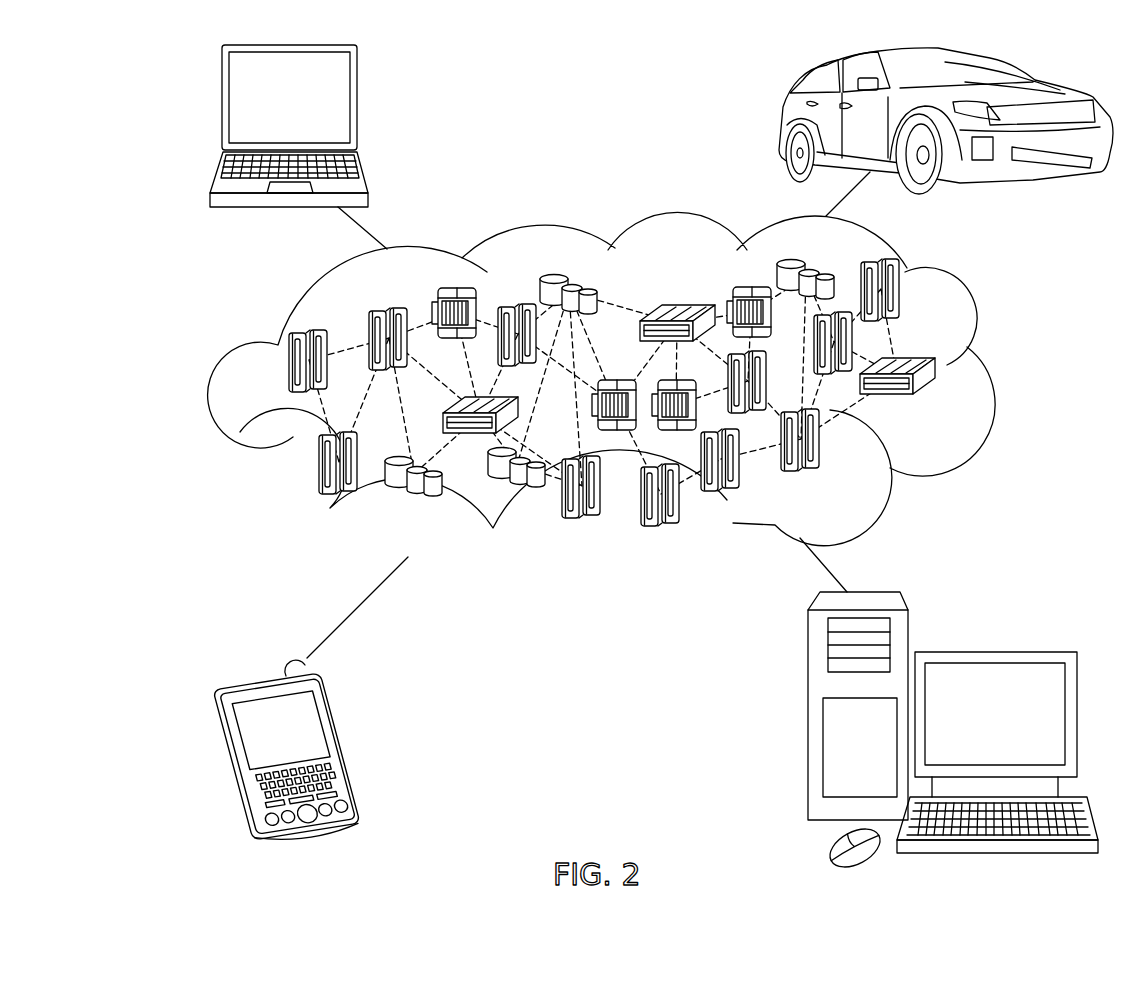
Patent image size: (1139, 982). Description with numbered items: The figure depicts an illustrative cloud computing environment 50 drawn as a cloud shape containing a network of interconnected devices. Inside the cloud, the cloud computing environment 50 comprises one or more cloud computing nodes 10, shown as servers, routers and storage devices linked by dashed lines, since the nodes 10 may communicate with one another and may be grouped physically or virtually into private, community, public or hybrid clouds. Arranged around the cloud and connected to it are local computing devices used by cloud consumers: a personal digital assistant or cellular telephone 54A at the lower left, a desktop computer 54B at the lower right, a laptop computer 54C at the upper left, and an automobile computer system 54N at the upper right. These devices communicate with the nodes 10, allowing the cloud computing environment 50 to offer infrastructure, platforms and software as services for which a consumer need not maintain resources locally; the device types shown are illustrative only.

The cloud computing nodes 10 is at (629, 378).
The cloud computing environment 50 is at (990, 371).
The personal digital assistant or cellular telephone 54A is at (346, 744).
The desktop computer 54B is at (995, 650).
The laptop computer 54C is at (357, 104).
The automobile computer system 54N is at (778, 117).